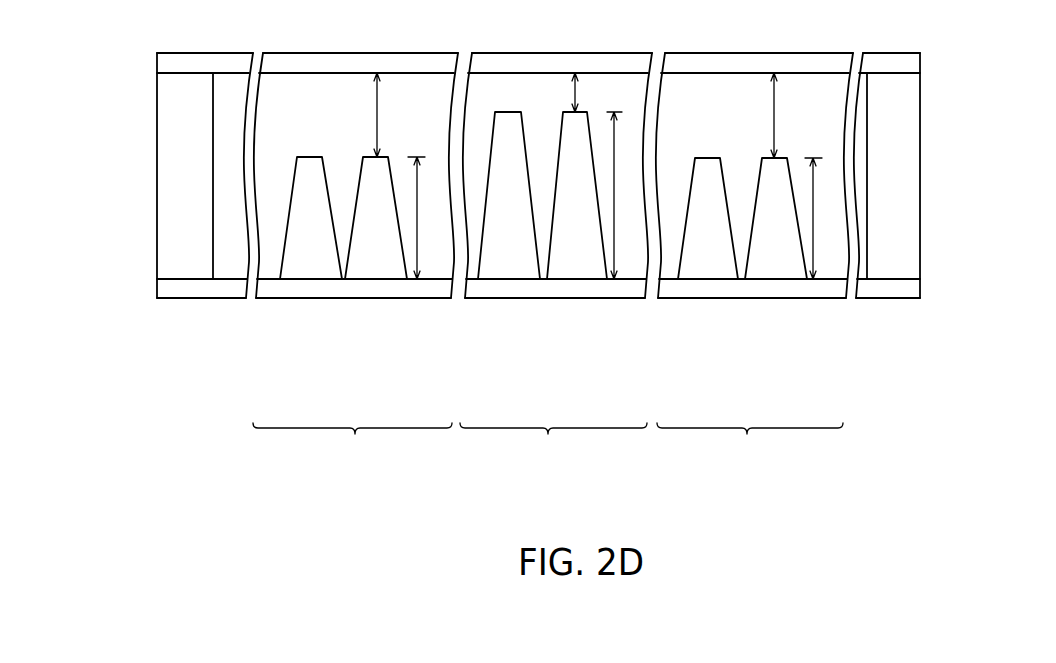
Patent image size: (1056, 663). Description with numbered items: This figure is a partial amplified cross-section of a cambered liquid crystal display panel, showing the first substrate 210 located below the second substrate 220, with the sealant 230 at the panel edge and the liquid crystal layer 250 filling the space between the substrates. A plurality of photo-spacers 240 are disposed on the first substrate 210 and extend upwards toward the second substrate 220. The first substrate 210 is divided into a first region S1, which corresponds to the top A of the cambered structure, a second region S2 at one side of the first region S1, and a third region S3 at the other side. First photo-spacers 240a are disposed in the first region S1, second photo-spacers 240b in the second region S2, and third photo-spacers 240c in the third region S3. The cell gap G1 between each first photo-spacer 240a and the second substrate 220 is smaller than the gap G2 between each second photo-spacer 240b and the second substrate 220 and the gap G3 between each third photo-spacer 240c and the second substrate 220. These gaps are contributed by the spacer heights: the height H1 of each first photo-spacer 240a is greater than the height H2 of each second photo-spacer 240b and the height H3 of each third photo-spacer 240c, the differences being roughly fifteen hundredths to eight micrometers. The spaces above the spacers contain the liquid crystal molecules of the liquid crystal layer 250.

The first substrate 210 is at (898, 288).
The second substrate 220 is at (898, 64).
The sealant 230 is at (898, 213).
The photo-spacers 240 is at (543, 266).
The first photo-spacers 240a is at (577, 260).
The second photo-spacers 240b is at (368, 267).
The third photo-spacers 240c is at (742, 263).
The liquid crystal layer 250 is at (858, 125).
The top of the cambered structure A is at (591, 47).
The gap G1 is at (591, 93).
The gap G2 is at (390, 115).
The gap G3 is at (788, 115).
The height H1 is at (627, 195).
The height H2 is at (428, 218).
The height H3 is at (823, 218).
The first region S1 is at (553, 448).
The second region S2 is at (352, 448).
The third region S3 is at (750, 448).